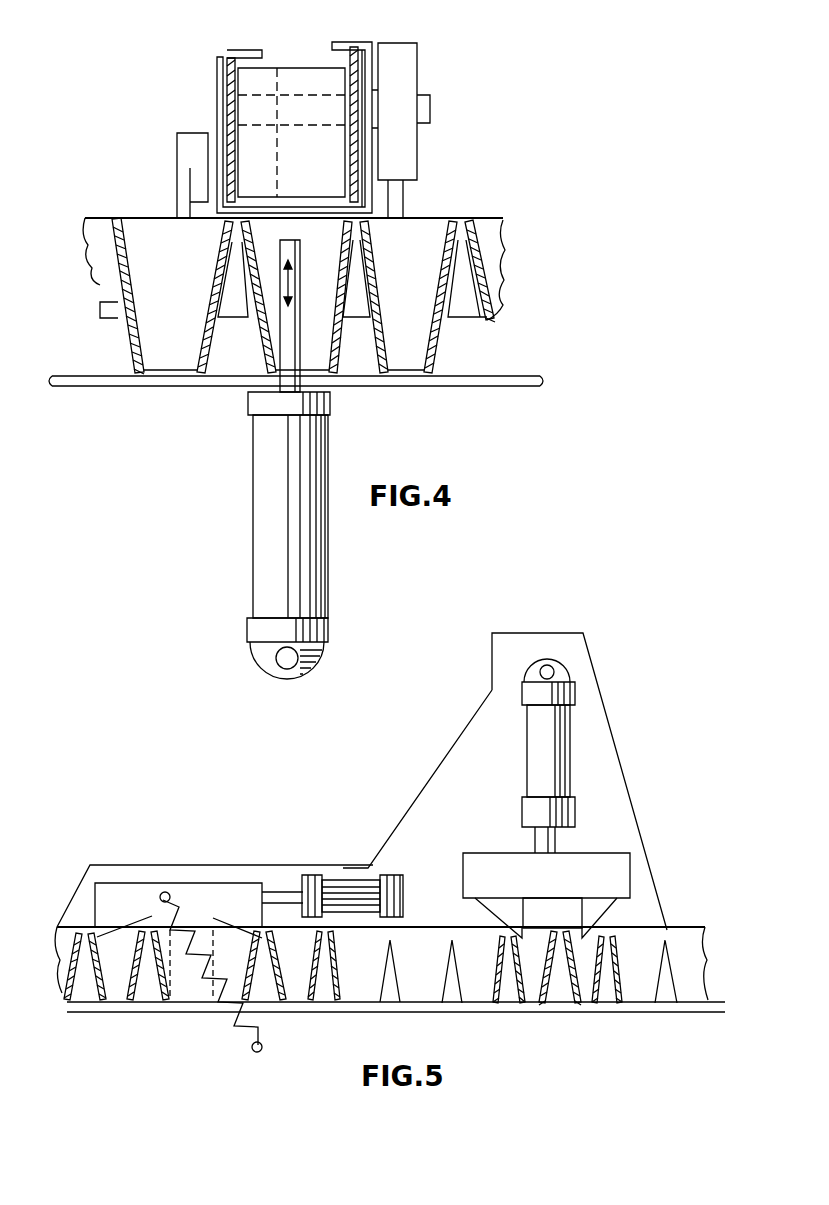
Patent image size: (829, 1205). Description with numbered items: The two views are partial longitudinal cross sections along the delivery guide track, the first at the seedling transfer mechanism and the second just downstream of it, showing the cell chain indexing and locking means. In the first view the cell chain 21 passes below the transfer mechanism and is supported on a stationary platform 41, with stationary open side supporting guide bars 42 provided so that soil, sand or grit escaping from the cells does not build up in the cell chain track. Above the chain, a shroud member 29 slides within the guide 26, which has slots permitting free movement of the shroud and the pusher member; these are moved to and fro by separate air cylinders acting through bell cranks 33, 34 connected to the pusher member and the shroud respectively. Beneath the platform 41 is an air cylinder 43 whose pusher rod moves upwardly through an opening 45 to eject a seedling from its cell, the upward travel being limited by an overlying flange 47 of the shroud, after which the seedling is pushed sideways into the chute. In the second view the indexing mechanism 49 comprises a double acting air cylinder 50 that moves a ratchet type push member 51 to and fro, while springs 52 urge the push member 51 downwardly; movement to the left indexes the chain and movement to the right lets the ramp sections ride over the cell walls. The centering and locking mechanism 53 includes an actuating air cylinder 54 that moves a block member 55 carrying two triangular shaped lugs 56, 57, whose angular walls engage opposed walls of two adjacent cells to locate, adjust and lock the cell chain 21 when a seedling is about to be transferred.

In FIG. 4, the cell chain 21 is at (460, 228).
In FIG. 4, the guide 26 is at (217, 78).
In FIG. 4, the shroud member 29 is at (227, 112).
In FIG. 4, the bell crank 33 is at (178, 196).
In FIG. 4, the bell crank 34 is at (403, 207).
In FIG. 4, the stationary platform 41 is at (171, 380).
In FIG. 5, the stationary platform 41 is at (396, 1010).
In FIG. 4, the supporting guide bars 42 is at (115, 278).
In FIG. 4, the air cylinder 43 is at (312, 460).
In FIG. 4, the opening 45 is at (258, 396).
In FIG. 4, the overlying flange 47 is at (243, 50).
In FIG. 5, the indexing mechanism 49 is at (252, 866).
In FIG. 5, the double acting air cylinder 50 is at (352, 888).
In FIG. 5, the ratchet type push member 51 is at (172, 893).
In FIG. 5, the springs 52 is at (226, 1030).
In FIG. 5, the centering and locking mechanism 53 is at (578, 752).
In FIG. 5, the actuating air cylinder 54 is at (567, 725).
In FIG. 5, the block member 55 is at (595, 865).
In FIG. 5, the triangular shaped lug 56 is at (590, 905).
In FIG. 5, the triangular shaped lug 57 is at (505, 905).